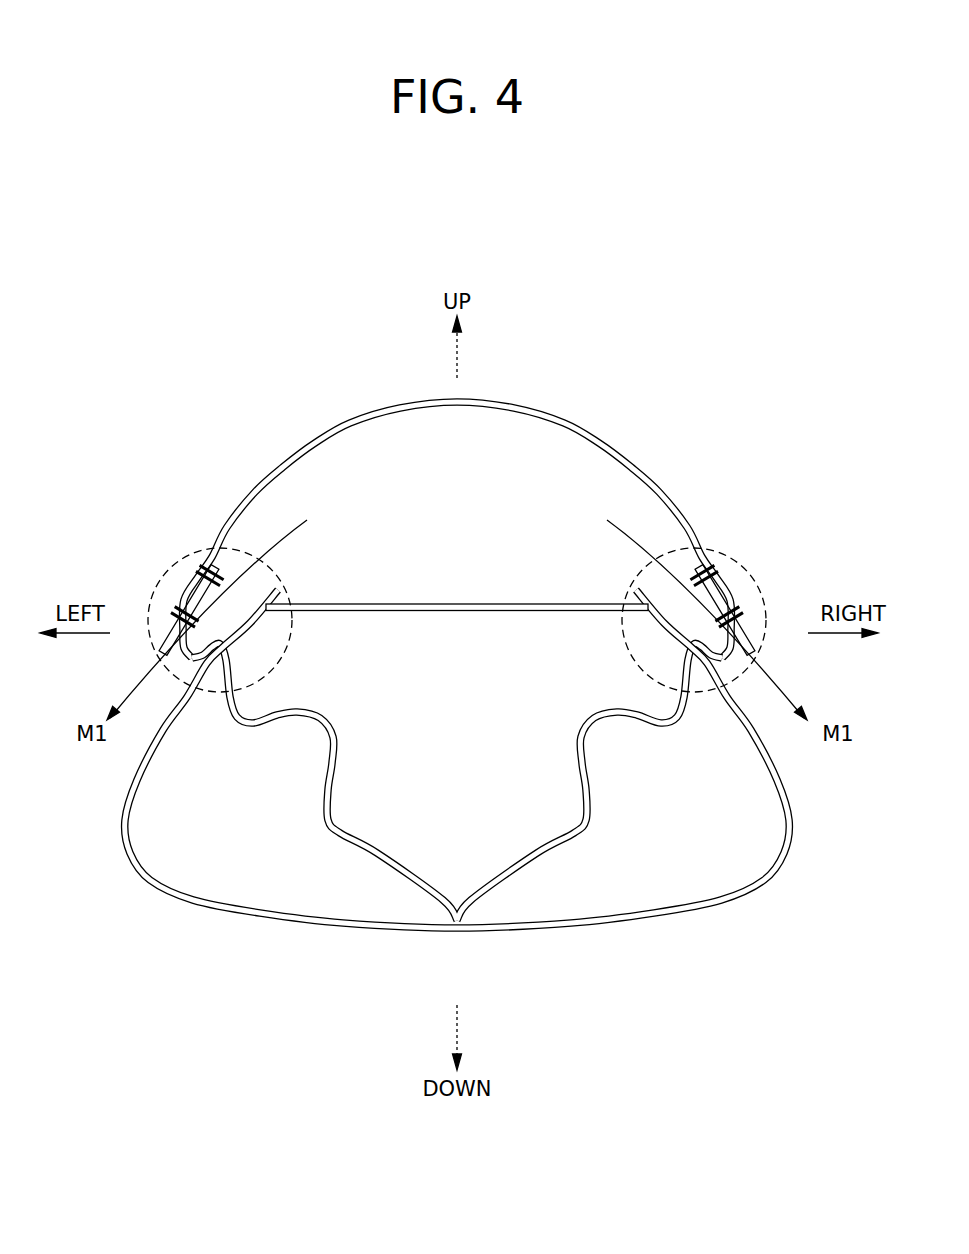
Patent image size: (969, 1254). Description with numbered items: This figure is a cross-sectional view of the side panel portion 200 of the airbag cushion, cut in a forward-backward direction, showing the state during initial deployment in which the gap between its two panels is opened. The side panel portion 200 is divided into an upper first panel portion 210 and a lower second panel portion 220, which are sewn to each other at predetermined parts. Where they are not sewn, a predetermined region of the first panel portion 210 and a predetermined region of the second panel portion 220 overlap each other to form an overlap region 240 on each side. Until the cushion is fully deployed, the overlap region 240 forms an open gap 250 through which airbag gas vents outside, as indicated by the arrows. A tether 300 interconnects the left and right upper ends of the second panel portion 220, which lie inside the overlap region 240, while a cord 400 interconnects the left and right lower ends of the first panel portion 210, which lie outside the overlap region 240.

The side panel portion 200 is at (285, 460).
The first panel portion 210 is at (342, 426).
The second panel portion 220 is at (342, 932).
The overlap region 240 is at (170, 570).
The open gap 250 is at (171, 632).
The tether 300 is at (540, 602).
The cord 400 is at (324, 822).